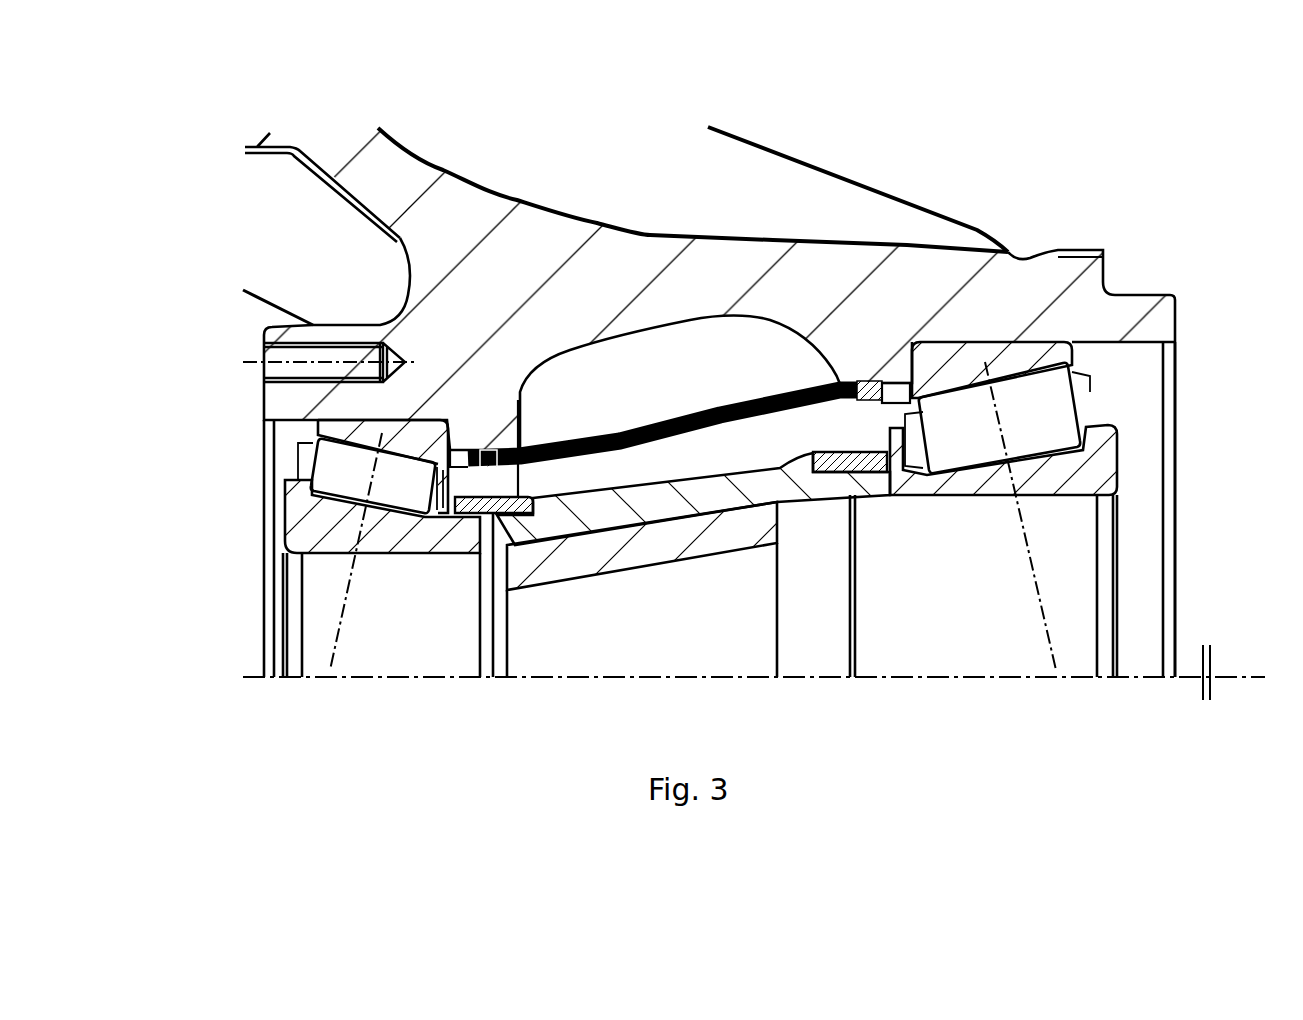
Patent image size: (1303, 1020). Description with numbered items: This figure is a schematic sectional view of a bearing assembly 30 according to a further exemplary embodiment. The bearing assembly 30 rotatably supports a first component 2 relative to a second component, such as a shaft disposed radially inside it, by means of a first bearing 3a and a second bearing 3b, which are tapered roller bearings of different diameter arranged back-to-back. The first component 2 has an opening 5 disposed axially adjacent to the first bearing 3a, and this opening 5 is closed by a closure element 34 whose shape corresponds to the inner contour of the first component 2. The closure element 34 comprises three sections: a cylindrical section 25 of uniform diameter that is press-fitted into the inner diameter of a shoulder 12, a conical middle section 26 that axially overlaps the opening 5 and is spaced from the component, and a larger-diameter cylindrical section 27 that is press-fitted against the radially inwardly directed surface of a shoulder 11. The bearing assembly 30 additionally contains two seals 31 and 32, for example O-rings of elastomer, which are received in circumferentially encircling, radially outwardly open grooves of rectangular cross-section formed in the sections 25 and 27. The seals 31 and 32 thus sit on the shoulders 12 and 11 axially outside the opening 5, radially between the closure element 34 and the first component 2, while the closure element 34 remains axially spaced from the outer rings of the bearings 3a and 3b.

The first component 2 is at (1015, 302).
The opening 5 is at (750, 318).
The shoulder 11 is at (862, 380).
The shoulder 12 is at (463, 447).
The cylindrical section 25 is at (540, 515).
The middle section 26 is at (640, 447).
The cylindrical section 27 is at (848, 475).
The bearing assembly 30 is at (1125, 205).
The seal 31 is at (490, 450).
The seal 32 is at (875, 381).
The closure element 34 is at (758, 392).
The first bearing 3a is at (1028, 367).
The second bearing 3b is at (308, 528).